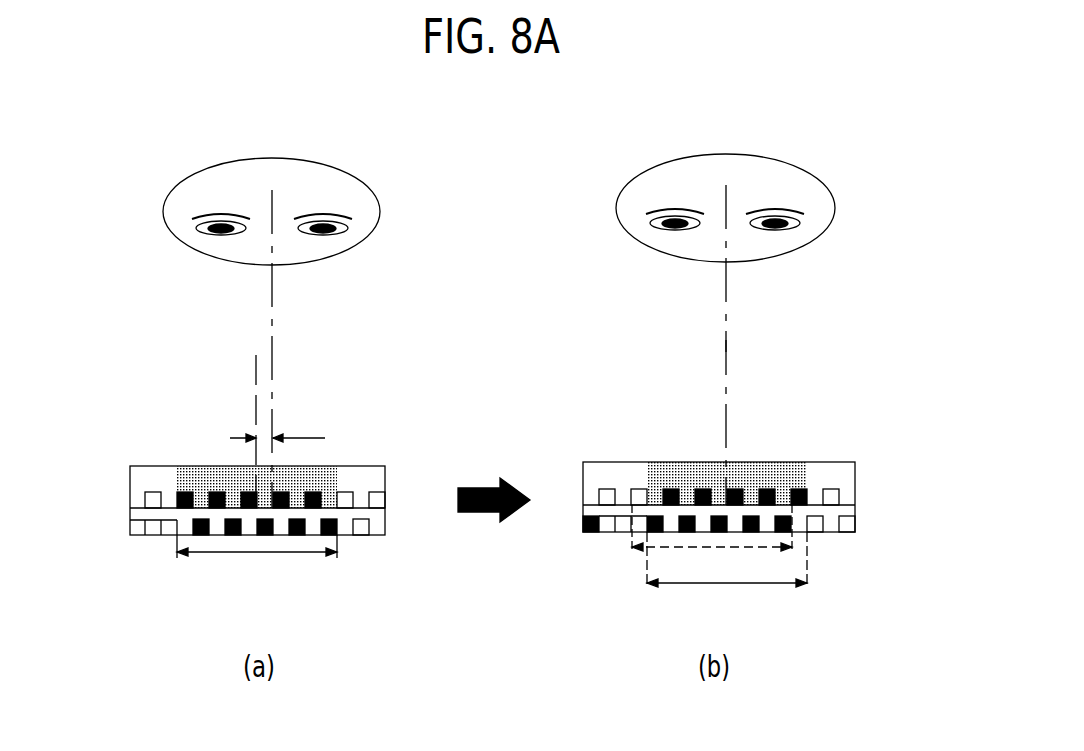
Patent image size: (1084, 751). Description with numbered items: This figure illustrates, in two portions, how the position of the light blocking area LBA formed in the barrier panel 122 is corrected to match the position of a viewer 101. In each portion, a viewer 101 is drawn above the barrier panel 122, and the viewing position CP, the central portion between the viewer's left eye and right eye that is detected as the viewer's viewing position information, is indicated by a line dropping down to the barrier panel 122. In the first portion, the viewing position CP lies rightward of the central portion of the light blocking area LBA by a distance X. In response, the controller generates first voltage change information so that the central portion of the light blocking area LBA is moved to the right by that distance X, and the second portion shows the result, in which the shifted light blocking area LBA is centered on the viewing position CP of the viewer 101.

The viewer 101 is at (396, 209).
The barrier panel 122 is at (110, 448).
The viewing position CP is at (273, 370).
The light blocking area LBA is at (492, 559).
The distance X is at (277, 426).